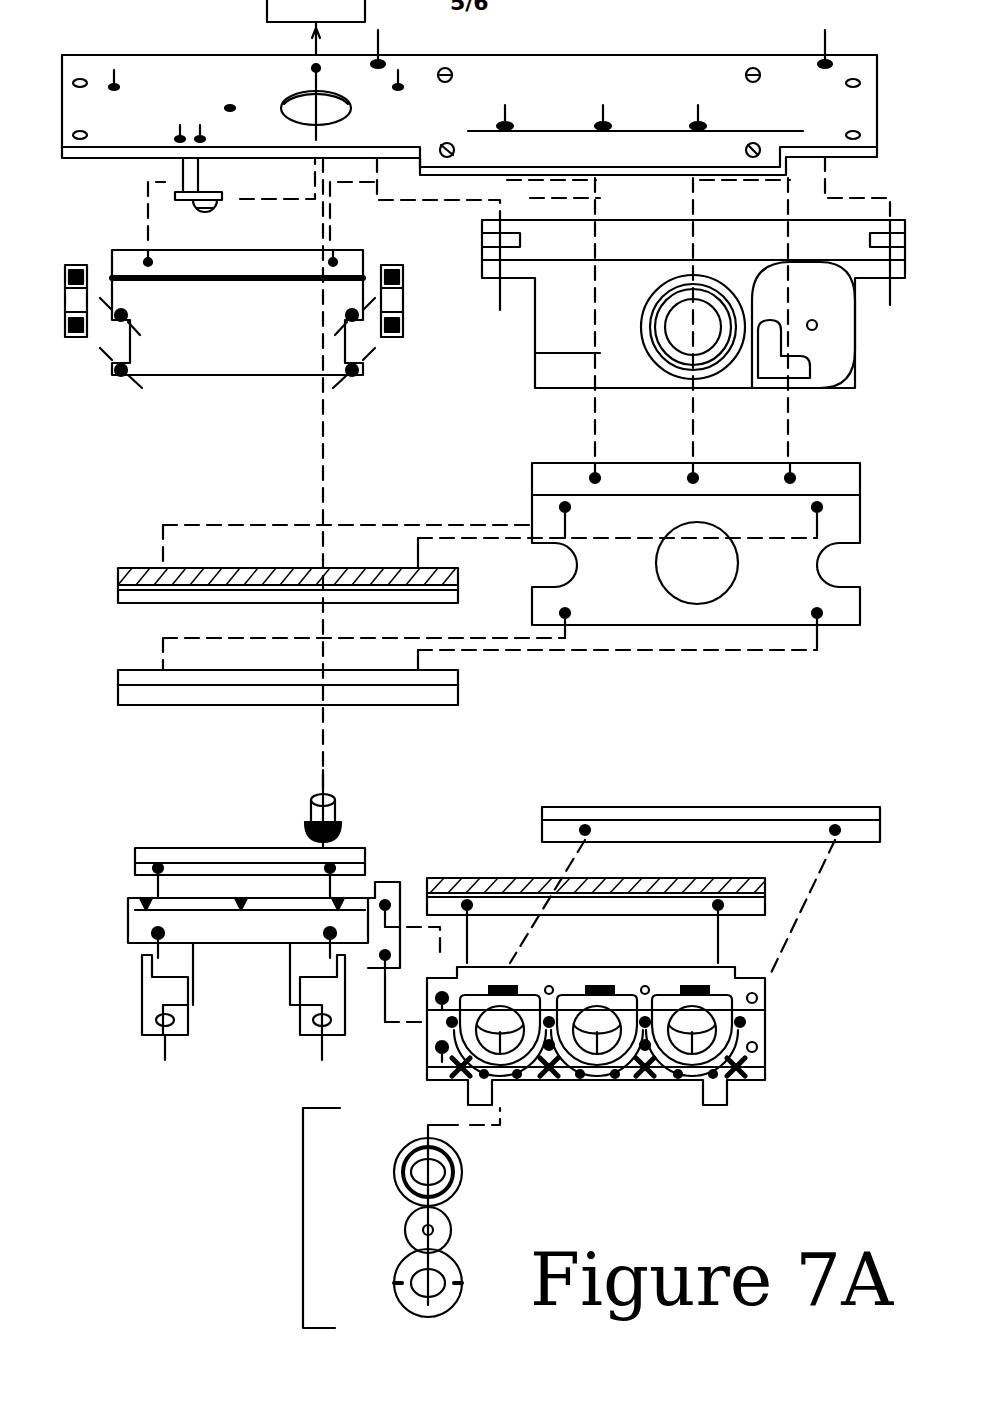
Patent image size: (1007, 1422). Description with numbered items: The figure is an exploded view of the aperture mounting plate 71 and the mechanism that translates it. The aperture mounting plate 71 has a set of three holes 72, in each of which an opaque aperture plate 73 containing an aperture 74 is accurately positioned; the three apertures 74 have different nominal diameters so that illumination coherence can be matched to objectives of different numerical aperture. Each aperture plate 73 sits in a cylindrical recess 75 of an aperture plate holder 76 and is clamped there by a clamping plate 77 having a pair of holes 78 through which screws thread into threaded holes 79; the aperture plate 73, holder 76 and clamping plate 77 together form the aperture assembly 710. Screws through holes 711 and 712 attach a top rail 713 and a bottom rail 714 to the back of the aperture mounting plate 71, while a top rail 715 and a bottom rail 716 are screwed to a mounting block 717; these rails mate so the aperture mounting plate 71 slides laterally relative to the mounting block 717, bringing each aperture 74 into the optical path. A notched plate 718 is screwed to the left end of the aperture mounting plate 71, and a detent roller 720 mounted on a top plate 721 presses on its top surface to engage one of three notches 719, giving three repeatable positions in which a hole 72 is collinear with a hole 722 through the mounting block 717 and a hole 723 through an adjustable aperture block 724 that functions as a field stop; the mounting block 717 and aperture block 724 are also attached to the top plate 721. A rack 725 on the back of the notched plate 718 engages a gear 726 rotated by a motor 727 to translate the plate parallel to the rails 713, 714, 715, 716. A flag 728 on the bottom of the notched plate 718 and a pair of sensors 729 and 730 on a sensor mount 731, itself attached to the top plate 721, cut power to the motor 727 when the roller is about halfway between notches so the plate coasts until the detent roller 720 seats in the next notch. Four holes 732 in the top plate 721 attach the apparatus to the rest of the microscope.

The aperture mounting plate 71 is at (748, 1060).
The holes 72 is at (598, 1052).
The aperture plate 73 is at (436, 1230).
The aperture 74 is at (410, 1228).
The cylindrical recess 75 is at (406, 1150).
The aperture plate holder 76 is at (448, 1164).
The clamping plate 77 is at (462, 1278).
The holes 78 is at (401, 1281).
The threaded holes 79 is at (402, 1172).
The aperture assembly 710 is at (347, 1218).
The holes 711 is at (716, 908).
The holes 712 is at (836, 835).
The top rail 713 is at (500, 892).
The bottom rail 714 is at (744, 825).
The top rail 715 is at (128, 596).
The bottom rail 716 is at (135, 690).
The mounting block 717 is at (792, 592).
The notched plate 718 is at (250, 945).
The notches 719 is at (140, 900).
The detent roller 720 is at (220, 205).
The top plate 721 is at (682, 96).
The hole 722 is at (716, 577).
The hole 723 is at (690, 335).
The adjustable aperture block 724 is at (548, 325).
The rack 725 is at (252, 860).
The gear 726 is at (334, 792).
The motor 727 is at (267, 8).
The flag 728 is at (186, 1014).
The sensor 729 is at (88, 270).
The sensor 730 is at (400, 270).
The sensor mount 731 is at (254, 344).
The holes 732 is at (453, 77).